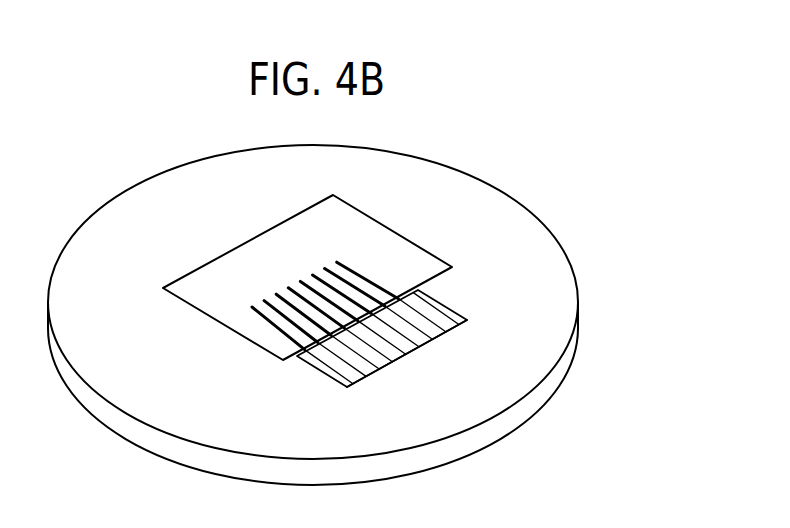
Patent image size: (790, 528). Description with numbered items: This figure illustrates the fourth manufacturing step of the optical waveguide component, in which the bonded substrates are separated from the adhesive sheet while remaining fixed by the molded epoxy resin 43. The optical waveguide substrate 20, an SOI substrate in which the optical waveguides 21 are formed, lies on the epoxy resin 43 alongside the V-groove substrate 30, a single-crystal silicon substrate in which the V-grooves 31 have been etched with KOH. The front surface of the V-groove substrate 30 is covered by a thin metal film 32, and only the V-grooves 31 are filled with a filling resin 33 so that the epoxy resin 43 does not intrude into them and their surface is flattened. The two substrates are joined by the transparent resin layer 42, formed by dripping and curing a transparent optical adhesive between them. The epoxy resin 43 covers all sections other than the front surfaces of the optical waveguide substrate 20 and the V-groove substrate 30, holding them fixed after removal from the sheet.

The optical waveguide substrate 20 is at (342, 223).
The optical waveguides 21 is at (352, 268).
The transparent resin layer 42 is at (418, 290).
The V-groove substrate 30 is at (474, 300).
The thin metal film 32 is at (443, 300).
The V-grooves 31 is at (467, 398).
The filling resin 33 is at (452, 331).
The epoxy resin 43 is at (537, 304).